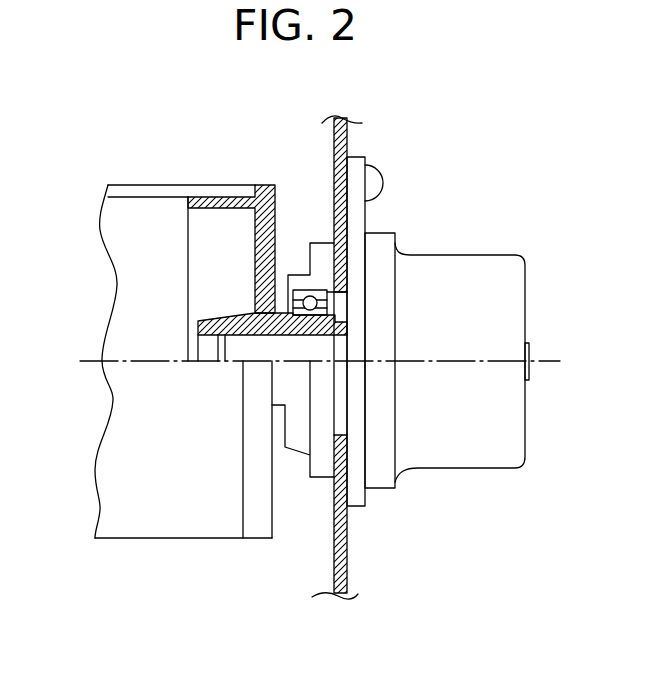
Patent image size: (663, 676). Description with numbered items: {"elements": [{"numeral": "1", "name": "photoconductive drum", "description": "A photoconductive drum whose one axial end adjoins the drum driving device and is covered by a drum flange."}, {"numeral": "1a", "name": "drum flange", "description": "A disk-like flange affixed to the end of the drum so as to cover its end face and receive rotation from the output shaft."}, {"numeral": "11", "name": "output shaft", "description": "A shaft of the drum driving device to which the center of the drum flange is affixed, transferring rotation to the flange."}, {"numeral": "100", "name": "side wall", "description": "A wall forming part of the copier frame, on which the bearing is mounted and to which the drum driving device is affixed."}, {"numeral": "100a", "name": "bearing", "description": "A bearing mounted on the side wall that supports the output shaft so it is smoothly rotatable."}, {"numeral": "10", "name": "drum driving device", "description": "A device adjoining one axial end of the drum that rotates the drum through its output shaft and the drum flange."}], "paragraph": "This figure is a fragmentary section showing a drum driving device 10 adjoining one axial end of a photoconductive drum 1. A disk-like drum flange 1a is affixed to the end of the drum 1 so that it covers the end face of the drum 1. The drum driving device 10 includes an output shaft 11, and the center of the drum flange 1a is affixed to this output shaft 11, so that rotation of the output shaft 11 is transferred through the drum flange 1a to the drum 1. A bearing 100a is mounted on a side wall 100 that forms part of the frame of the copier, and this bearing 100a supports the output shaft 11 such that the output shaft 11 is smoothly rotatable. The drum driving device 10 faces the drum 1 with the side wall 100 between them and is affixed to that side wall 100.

The body 1 is at (151, 527).
The bore of body 1a is at (258, 527).
The bearing bracket / flange 11 is at (245, 342).
The mounting plate 100 is at (350, 125).
The boss of mounting plate 100a is at (322, 247).
The motor 10 is at (452, 240).